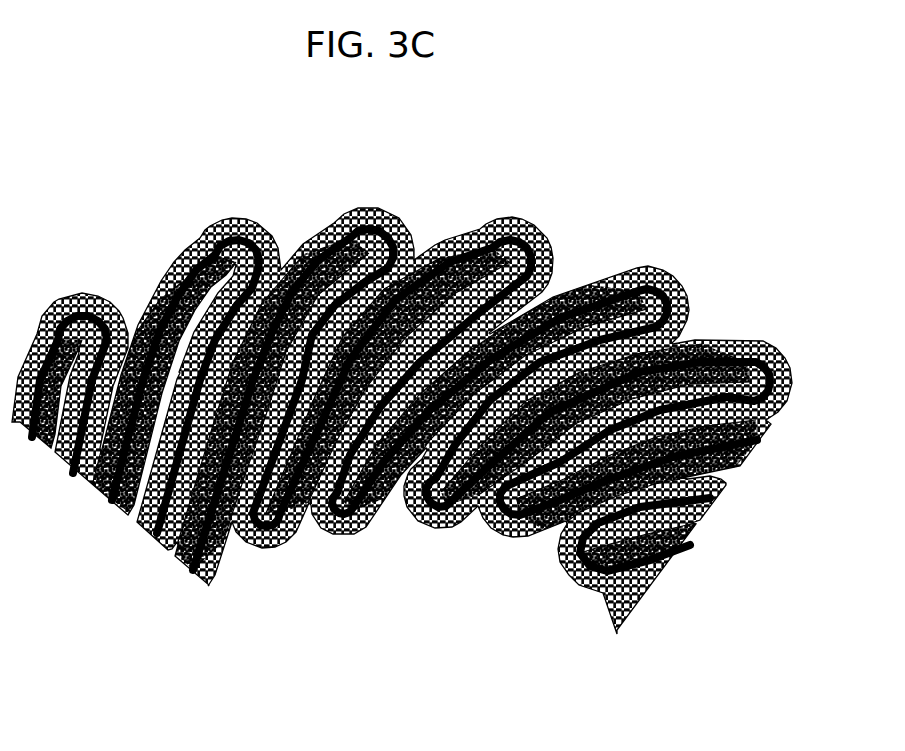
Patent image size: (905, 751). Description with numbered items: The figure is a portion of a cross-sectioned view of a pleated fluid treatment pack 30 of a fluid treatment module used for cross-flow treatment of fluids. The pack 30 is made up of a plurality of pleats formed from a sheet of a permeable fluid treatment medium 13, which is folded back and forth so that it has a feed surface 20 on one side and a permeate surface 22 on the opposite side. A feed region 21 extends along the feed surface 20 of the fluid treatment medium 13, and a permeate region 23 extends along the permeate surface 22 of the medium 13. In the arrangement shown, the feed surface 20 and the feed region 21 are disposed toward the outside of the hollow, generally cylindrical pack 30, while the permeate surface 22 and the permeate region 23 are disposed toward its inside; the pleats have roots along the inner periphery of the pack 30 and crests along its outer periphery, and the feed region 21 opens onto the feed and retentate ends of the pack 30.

The permeable fluid treatment medium 13 is at (467, 248).
The feed surface 20 is at (322, 249).
The feed region 21 is at (612, 262).
The permeate surface 22 is at (335, 512).
The permeate region 23 is at (508, 533).
The pleated fluid treatment pack 30 is at (715, 333).